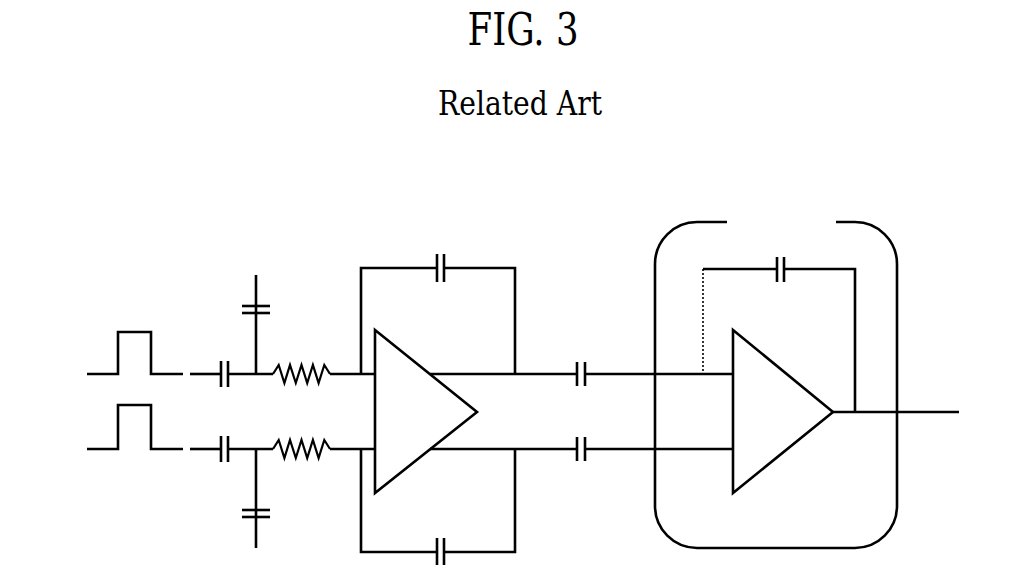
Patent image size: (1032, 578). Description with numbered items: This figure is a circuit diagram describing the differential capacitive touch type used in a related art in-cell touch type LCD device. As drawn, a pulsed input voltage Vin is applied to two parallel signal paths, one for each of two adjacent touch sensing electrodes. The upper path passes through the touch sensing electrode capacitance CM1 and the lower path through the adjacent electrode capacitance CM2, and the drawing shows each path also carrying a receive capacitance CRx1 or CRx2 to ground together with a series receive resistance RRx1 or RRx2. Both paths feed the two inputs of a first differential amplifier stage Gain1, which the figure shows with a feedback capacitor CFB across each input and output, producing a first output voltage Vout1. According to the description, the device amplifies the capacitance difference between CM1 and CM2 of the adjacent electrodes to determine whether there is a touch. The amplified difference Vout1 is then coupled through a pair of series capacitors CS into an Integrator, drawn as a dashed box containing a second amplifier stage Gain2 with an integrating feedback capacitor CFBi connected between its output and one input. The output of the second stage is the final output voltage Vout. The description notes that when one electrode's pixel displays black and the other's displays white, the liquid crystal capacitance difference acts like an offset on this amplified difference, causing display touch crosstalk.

The input voltage pulse Vin is at (135, 375).
The capacitance of a touch sensing electrode CM1 is at (223, 387).
The capacitance of an adjacent touch sensing electrode CM2 is at (223, 464).
The receive capacitance CRx(1) CRx1 is at (286, 324).
The receive capacitance CRx(2) CRx2 is at (286, 498).
The receive resistance RRx(1) RRx1 is at (303, 389).
The receive resistance RRx(2) RRx2 is at (303, 466).
The first gain amplifier Gain(1) Gain1 is at (426, 411).
The feedback capacitor CFB is at (438, 409).
The first output voltage Vout(1) Vout1 is at (503, 411).
The sampling capacitor CS is at (580, 414).
The integrator Integrator is at (776, 379).
The integrator feedback capacitor CFB(i) CFBi is at (779, 334).
The second gain amplifier Gain(2) Gain2 is at (783, 411).
The output voltage Vout is at (896, 396).